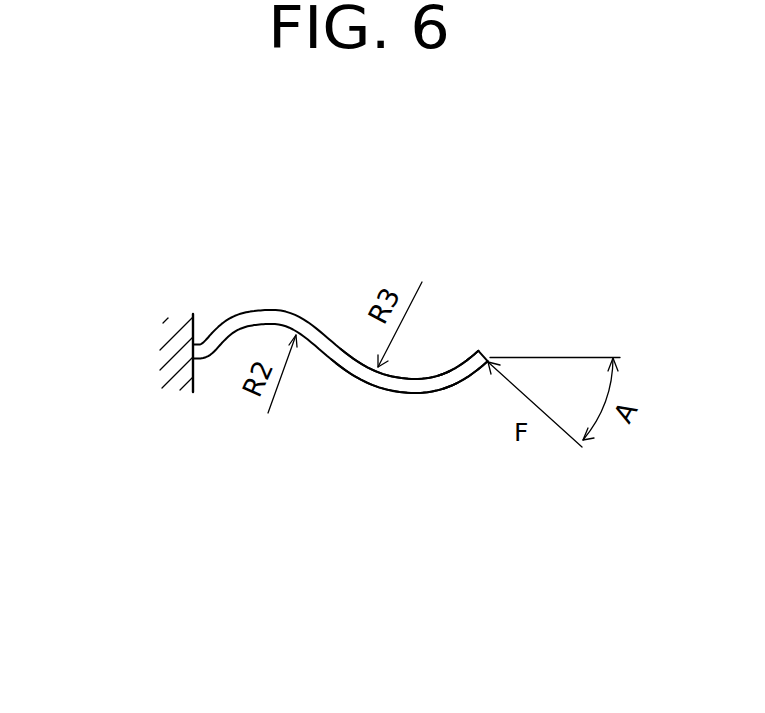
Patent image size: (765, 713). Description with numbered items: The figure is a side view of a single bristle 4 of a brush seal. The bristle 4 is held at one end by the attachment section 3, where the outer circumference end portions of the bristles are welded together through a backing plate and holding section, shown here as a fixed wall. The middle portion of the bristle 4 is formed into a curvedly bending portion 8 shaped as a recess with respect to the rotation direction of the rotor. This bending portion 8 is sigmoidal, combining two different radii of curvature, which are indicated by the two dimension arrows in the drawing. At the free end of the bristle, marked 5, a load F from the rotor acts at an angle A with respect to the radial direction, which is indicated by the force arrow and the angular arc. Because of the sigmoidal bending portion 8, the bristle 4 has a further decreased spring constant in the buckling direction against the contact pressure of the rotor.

The attachment section 3 is at (158, 363).
The bristle 4 is at (293, 290).
The free end of spring arm 5 is at (472, 348).
The bending portion 8 is at (353, 376).